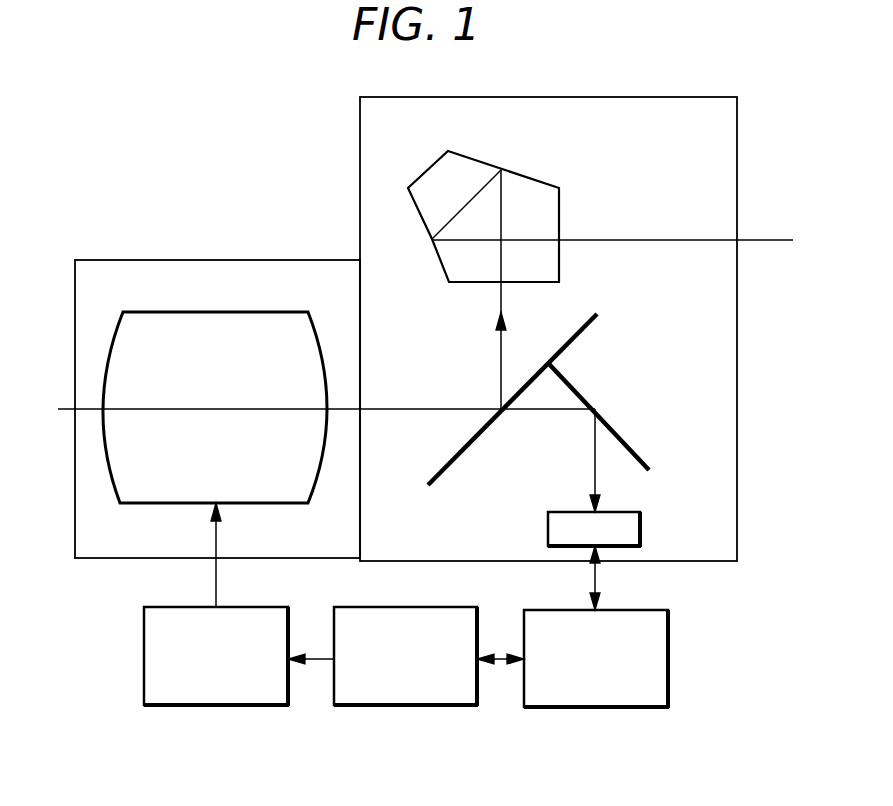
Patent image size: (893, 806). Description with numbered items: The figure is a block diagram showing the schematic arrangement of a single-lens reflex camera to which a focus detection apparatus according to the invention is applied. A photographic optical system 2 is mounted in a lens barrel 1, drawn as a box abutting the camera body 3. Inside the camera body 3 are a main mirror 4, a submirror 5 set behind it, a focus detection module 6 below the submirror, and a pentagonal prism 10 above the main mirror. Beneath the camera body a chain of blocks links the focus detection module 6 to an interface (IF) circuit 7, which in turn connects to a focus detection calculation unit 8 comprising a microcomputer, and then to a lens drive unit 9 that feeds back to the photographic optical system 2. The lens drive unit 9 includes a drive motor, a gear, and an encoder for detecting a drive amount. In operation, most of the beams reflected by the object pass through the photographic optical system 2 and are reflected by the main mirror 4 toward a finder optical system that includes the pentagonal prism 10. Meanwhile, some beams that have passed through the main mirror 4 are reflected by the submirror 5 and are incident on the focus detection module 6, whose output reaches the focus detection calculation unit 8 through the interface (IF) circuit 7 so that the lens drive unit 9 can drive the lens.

The lens barrel 1 is at (151, 260).
The photographic optical system 2 is at (229, 312).
The camera body 3 is at (718, 97).
The main mirror 4 is at (463, 452).
The submirror 5 is at (633, 446).
The focus detection module 6 is at (641, 538).
The interface (IF) circuit 7 is at (548, 708).
The focus detection calculation unit 8 is at (352, 706).
The lens drive unit 9 is at (173, 706).
The pentagonal prism 10 is at (535, 185).